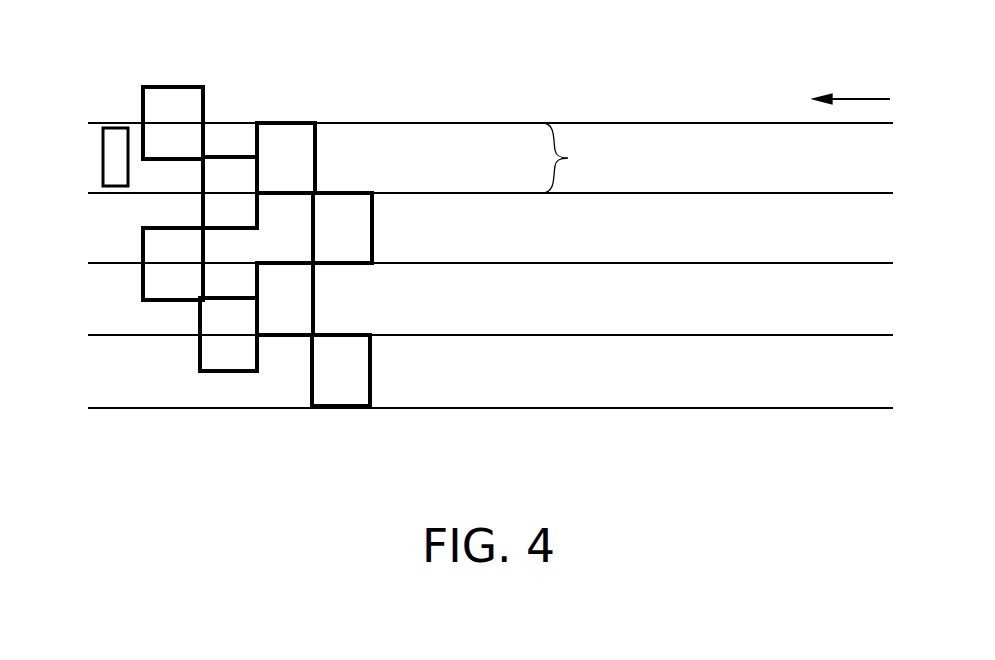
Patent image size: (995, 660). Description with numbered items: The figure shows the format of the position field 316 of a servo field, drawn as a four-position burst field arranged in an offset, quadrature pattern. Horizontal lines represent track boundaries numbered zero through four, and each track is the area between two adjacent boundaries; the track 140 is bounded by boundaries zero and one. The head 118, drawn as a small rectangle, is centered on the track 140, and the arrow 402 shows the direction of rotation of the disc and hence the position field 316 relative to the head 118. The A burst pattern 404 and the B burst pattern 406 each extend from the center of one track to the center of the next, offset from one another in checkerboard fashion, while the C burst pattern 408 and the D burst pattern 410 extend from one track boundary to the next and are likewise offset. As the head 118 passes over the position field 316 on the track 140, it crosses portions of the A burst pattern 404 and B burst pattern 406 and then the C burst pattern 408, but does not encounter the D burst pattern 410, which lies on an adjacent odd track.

The head 118 is at (117, 152).
The track 140 is at (582, 158).
The position field 316 is at (337, 78).
The arrow 402 is at (851, 88).
The A burst pattern 404 is at (192, 97).
The B burst pattern 406 is at (212, 165).
The C burst pattern 408 is at (297, 175).
The D burst pattern 410 is at (353, 245).